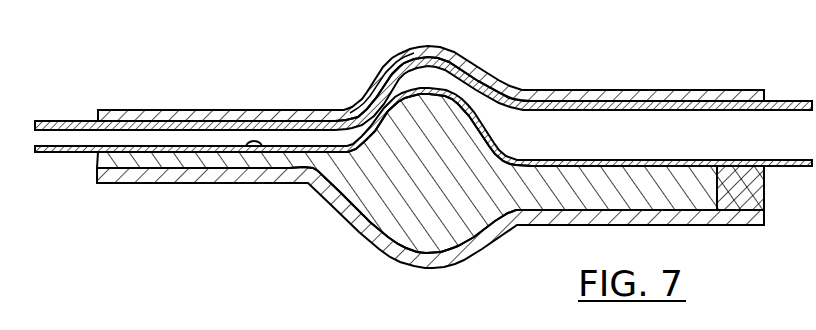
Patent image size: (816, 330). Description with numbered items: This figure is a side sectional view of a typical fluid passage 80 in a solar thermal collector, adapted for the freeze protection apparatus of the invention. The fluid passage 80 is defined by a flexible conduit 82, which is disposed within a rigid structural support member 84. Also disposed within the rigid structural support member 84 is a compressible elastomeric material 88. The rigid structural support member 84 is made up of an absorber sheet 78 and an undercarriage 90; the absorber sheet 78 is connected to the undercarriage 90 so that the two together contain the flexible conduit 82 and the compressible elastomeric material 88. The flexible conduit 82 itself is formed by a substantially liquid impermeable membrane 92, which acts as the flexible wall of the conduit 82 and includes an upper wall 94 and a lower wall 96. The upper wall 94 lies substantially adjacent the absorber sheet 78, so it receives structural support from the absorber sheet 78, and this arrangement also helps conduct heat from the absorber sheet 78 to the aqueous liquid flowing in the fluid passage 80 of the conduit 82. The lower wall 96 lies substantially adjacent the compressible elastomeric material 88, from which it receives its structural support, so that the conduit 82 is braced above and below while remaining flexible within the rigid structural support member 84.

The absorber sheet 78 is at (159, 110).
The fluid passage 80 is at (315, 133).
The flexible conduit 82 is at (79, 115).
The rigid structural support member 84 is at (237, 103).
The compressible elastomeric material 88 is at (180, 160).
The undercarriage 90 is at (150, 183).
The liquid impermeable membrane 92 is at (260, 150).
The upper wall 94 is at (50, 121).
The lower wall 96 is at (62, 153).